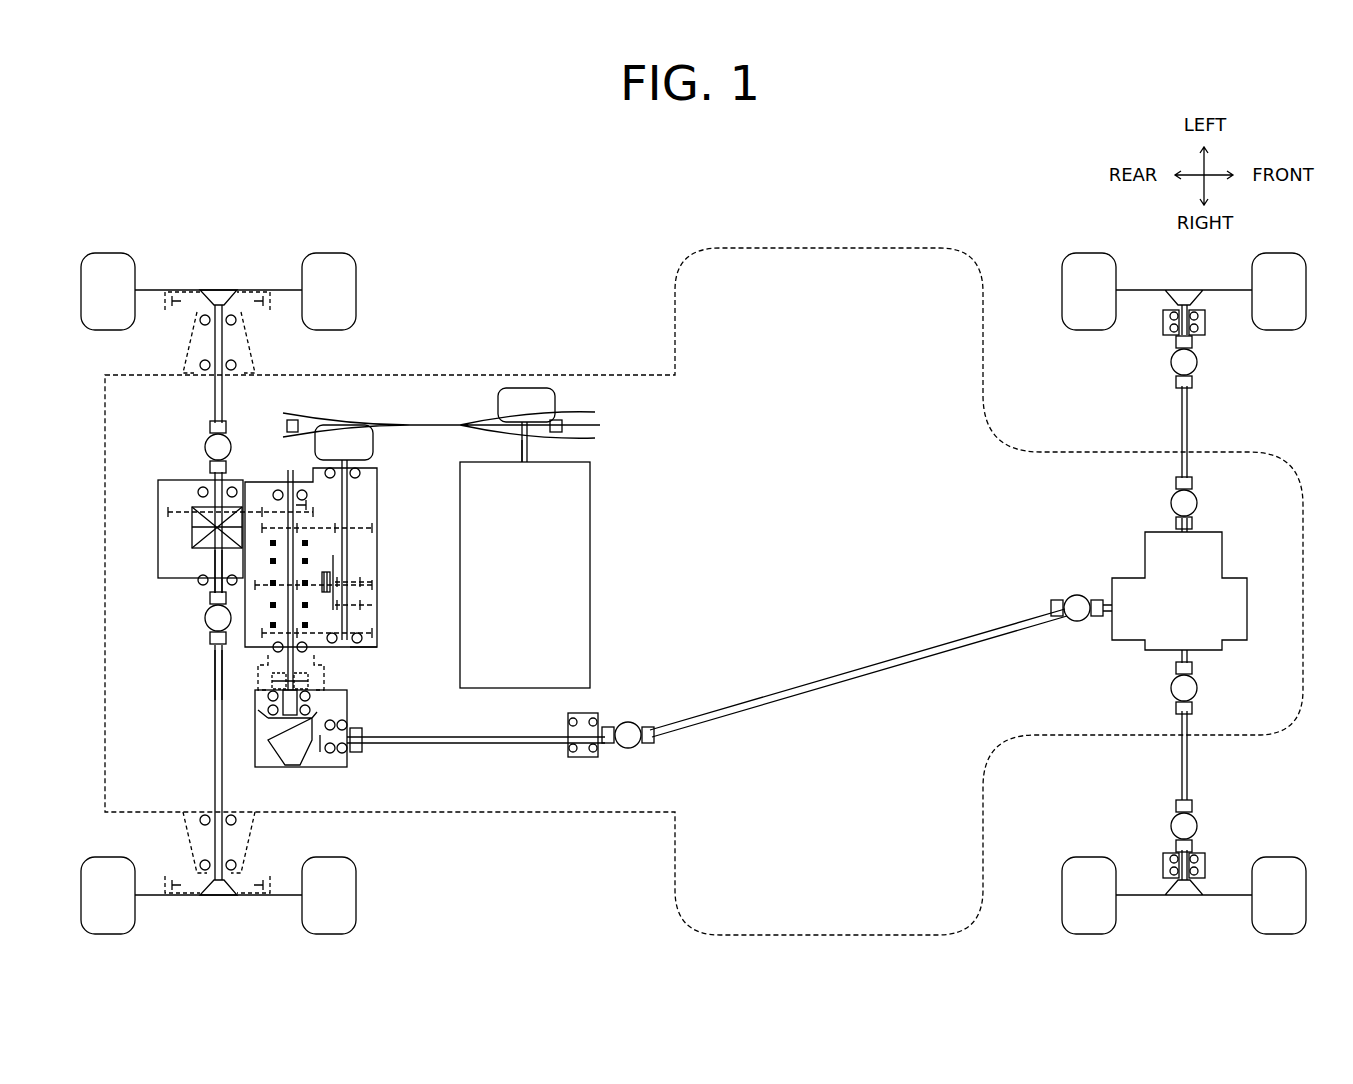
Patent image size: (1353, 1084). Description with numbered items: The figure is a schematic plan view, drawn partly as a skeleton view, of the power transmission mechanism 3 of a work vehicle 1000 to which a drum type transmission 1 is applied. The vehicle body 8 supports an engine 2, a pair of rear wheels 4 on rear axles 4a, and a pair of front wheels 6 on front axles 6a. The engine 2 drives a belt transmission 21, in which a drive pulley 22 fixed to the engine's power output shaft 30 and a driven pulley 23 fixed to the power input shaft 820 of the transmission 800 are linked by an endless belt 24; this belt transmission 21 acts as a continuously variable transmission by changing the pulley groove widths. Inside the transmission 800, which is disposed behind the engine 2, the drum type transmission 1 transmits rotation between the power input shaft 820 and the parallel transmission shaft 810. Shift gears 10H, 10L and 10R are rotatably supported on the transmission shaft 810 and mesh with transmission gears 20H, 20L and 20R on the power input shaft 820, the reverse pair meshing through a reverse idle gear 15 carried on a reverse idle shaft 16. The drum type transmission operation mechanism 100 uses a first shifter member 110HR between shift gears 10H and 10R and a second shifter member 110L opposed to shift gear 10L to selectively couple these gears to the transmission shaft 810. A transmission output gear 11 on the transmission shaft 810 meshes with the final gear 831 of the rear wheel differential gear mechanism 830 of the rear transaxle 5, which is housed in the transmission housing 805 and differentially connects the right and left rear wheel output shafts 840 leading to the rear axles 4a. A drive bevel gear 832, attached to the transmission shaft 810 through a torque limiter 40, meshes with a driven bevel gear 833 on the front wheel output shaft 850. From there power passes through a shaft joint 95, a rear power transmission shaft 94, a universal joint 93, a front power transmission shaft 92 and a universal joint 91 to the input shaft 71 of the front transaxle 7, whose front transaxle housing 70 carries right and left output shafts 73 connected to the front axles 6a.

The work vehicle 1000 is at (704, 546).
The vehicle body 8 is at (888, 248).
The rear wheels 4 is at (330, 272).
The rear axles 4a is at (213, 345).
The front wheels 6 is at (1075, 276).
The front axles 6a is at (1206, 323).
The drum type transmission 1 is at (420, 694).
The engine 2 is at (586, 575).
The power transmission mechanism 3 is at (427, 798).
The rear transaxle 5 is at (173, 483).
The front transaxle 7 is at (1182, 584).
The front transaxle housing 70 is at (1222, 560).
The input shaft 71 is at (1108, 613).
The output shafts 73 is at (1190, 522).
The forward high-speed shift gear 10H is at (266, 540).
The reverse shift gear 10R is at (265, 573).
The forward low-speed shift gear 10L is at (265, 605).
The transmission output gear 11 is at (304, 508).
The reverse idle gear 15 is at (325, 575).
The reverse idle shaft 16 is at (335, 573).
The transmission gear 20H is at (337, 523).
The transmission gear 20R is at (355, 583).
The transmission gear 20L is at (355, 605).
The first shifter member 110HR is at (310, 545).
The second shifter member 110L is at (310, 626).
The belt transmission 21 is at (533, 379).
The drive pulley 22 is at (572, 415).
The driven pulley 23 is at (388, 413).
The belt 24 is at (437, 420).
The power output shaft 30 is at (535, 447).
The torque limiter 40 is at (268, 678).
The drum type transmission operation mechanism 100 is at (287, 468).
The transmission 800 is at (199, 442).
The transmission housing 805 is at (340, 650).
The transmission shaft 810 is at (287, 480).
The power input shaft 820 is at (347, 482).
The rear wheel differential gear mechanism 830 is at (189, 532).
The final gear 831 is at (186, 520).
The drive bevel gear 832 is at (270, 738).
The driven bevel gear 833 is at (303, 745).
The rear wheel output shafts 840 is at (212, 468).
The front wheel output shaft 850 is at (325, 740).
The universal joint 91 is at (1075, 604).
The front power transmission shaft 92 is at (885, 662).
The universal joint 93 is at (632, 742).
The rear power transmission shaft 94 is at (450, 743).
The shaft joint 95 is at (355, 748).